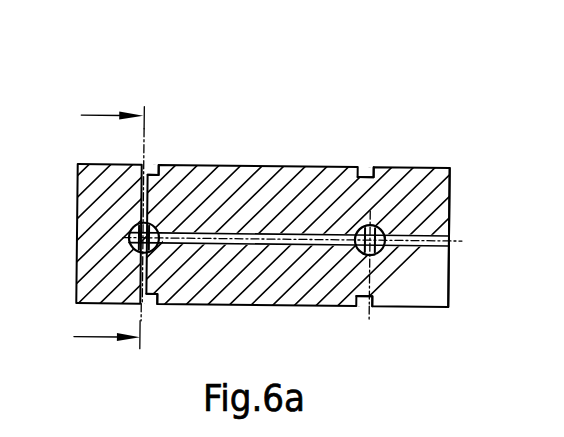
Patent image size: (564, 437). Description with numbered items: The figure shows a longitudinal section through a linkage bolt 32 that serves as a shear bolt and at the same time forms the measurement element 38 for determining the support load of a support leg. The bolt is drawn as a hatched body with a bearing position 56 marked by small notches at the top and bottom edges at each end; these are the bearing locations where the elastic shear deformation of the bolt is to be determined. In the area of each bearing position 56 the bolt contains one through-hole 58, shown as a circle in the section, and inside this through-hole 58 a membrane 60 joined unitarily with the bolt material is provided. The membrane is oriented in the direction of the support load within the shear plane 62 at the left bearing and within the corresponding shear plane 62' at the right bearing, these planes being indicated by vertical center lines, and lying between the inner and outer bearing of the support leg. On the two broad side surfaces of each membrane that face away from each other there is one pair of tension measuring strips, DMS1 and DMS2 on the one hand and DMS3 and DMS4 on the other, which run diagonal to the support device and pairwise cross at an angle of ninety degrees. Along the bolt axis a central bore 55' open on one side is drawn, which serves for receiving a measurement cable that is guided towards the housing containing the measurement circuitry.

The linkage bolt 32 is at (257, 188).
The measurement element 38 is at (260, 200).
The central bore 55' is at (485, 232).
The bearing position 56 is at (155, 166).
The through-hole 58 is at (135, 249).
The membrane 60 is at (150, 250).
The shear plane 62 is at (140, 339).
The shear plane 62' is at (368, 347).
The tension measuring strip DMS1 is at (140, 226).
The tension measuring strip DMS2 is at (162, 233).
The tension measuring strip DMS3 is at (362, 226).
The tension measuring strip DMS4 is at (381, 229).